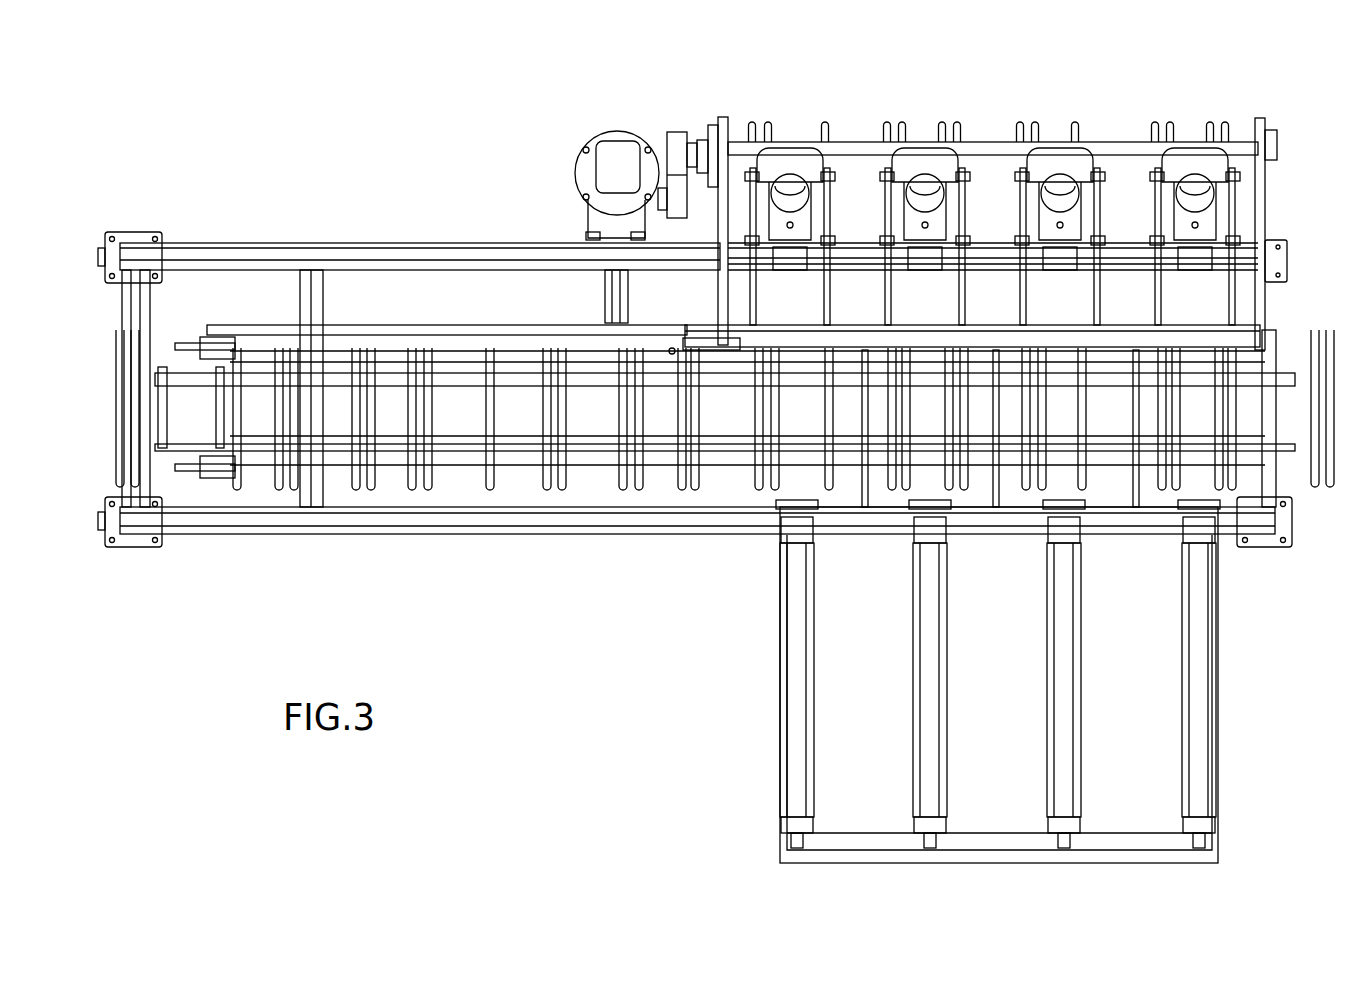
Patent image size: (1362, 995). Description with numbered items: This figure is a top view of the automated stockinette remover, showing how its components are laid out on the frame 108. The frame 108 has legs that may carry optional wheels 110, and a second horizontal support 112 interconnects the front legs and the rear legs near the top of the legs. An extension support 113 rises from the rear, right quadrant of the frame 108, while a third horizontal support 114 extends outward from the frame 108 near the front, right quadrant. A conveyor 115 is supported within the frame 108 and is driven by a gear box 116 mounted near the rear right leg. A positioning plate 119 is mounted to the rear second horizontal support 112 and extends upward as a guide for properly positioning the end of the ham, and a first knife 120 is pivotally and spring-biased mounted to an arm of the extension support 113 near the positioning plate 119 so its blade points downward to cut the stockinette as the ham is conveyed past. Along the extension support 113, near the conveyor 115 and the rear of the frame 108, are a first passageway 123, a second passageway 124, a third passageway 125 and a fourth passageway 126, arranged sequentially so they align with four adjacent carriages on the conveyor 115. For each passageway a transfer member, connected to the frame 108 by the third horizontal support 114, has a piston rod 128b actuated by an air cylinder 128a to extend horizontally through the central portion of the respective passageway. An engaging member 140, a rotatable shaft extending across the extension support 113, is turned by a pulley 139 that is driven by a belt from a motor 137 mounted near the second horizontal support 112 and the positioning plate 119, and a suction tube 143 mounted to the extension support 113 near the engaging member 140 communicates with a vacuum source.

The frame 108 is at (292, 243).
The wheels 110 is at (99, 258).
The second horizontal support 112 is at (438, 513).
The extension support 113 is at (1268, 249).
The third horizontal support 114 is at (848, 848).
The conveyor 115 is at (190, 398).
The gear box 116 is at (1243, 318).
The positioning plate 119 is at (460, 326).
The first knife 120 is at (672, 346).
The first passageway 123 is at (798, 480).
The second passageway 124 is at (918, 490).
The third passageway 125 is at (1053, 486).
The fourth passageway 126 is at (1193, 488).
The air cylinder 128a is at (800, 727).
The piston rod 128b is at (784, 507).
The motor 137 is at (573, 142).
The pulley 139 is at (676, 132).
The engaging member 140 is at (862, 150).
The suction tube 143 is at (1060, 178).